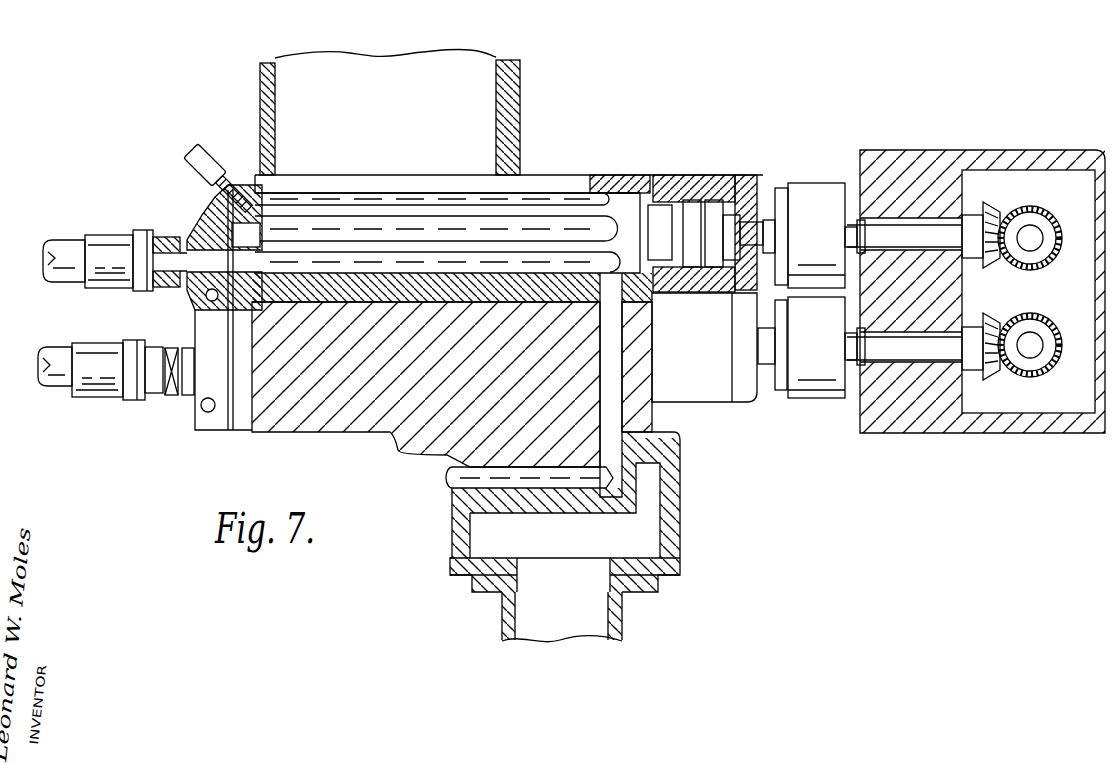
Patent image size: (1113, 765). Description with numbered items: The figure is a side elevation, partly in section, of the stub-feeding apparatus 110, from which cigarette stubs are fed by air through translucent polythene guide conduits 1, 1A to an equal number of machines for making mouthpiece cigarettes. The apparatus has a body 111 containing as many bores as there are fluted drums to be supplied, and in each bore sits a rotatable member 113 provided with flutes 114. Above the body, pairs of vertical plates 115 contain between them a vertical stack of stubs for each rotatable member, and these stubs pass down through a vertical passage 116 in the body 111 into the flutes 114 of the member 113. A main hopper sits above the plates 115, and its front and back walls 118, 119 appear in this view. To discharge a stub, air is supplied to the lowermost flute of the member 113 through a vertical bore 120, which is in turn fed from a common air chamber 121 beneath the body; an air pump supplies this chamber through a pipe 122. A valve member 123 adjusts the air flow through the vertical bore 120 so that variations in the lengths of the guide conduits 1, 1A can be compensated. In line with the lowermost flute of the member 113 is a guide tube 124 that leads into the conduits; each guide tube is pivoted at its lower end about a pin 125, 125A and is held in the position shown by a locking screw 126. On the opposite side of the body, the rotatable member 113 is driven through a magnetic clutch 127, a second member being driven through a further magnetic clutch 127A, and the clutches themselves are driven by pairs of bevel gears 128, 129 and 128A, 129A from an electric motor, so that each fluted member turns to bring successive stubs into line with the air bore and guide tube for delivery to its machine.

The guide conduit 1 is at (66, 244).
The guide conduit 1A is at (58, 355).
The stub-feeding apparatus 110 is at (389, 63).
The body 111 is at (312, 424).
The rotatable member 113 is at (312, 242).
The flutes 114 is at (408, 262).
The vertical plates 115 is at (402, 116).
The vertical passage 116 is at (541, 185).
The front wall 118 is at (260, 93).
The back wall 119 is at (515, 108).
The vertical bore 120 is at (610, 413).
The air chamber 121 is at (650, 517).
The pipe 122 is at (600, 618).
The valve member 123 is at (447, 473).
The guide tube 124 is at (168, 240).
The pin 125 is at (200, 306).
The pin 125A is at (206, 412).
The locking screw 126 is at (207, 162).
The magnetic clutch 127 is at (818, 193).
The magnetic clutch 127A is at (813, 390).
The bevel gear 128 is at (995, 270).
The bevel gear 128A is at (990, 382).
The bevel gear 129 is at (1035, 206).
The bevel gear 129A is at (1052, 372).